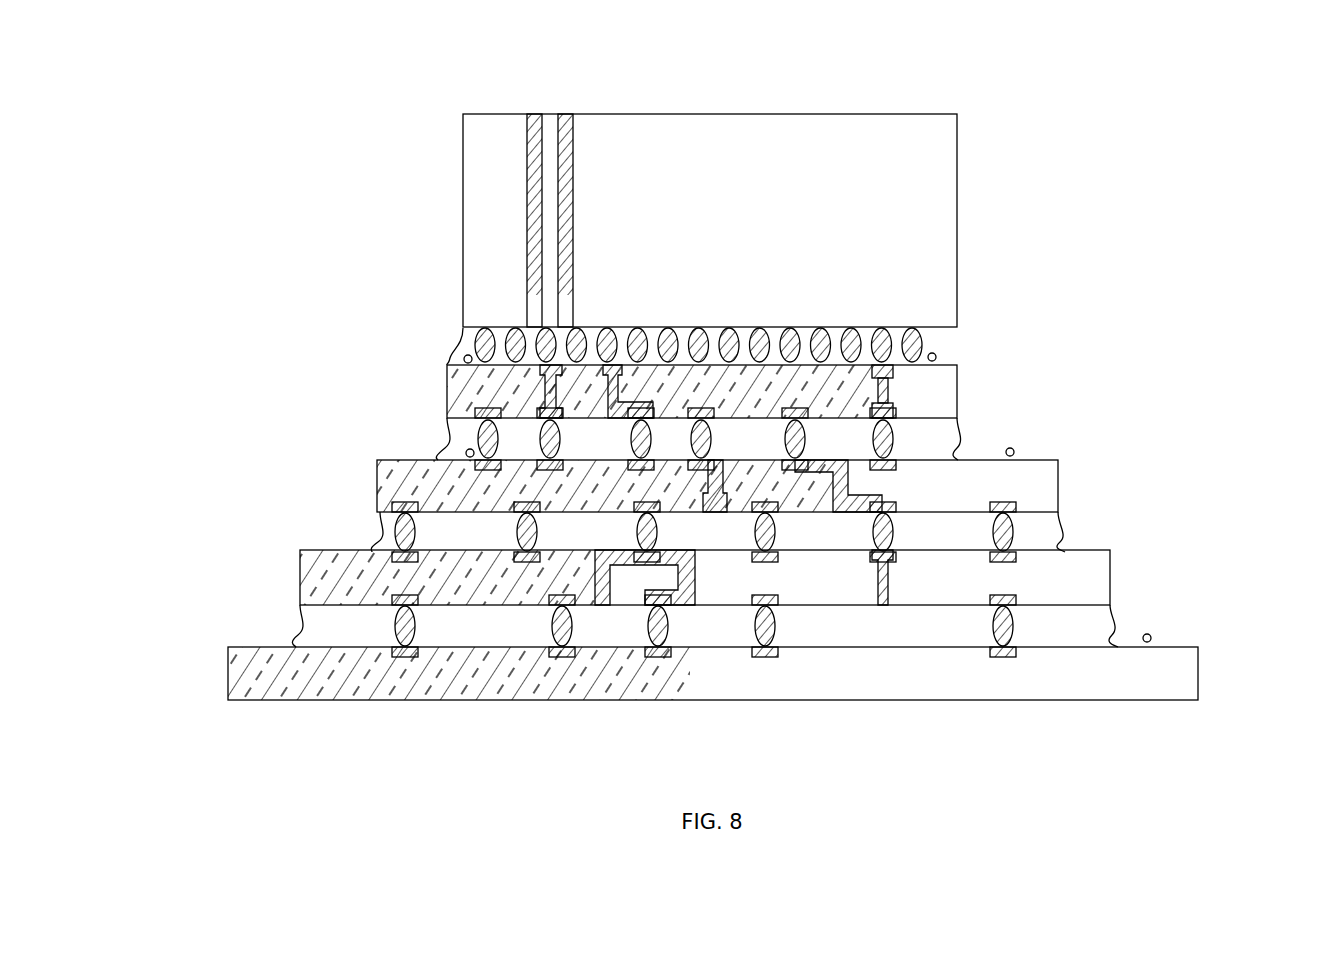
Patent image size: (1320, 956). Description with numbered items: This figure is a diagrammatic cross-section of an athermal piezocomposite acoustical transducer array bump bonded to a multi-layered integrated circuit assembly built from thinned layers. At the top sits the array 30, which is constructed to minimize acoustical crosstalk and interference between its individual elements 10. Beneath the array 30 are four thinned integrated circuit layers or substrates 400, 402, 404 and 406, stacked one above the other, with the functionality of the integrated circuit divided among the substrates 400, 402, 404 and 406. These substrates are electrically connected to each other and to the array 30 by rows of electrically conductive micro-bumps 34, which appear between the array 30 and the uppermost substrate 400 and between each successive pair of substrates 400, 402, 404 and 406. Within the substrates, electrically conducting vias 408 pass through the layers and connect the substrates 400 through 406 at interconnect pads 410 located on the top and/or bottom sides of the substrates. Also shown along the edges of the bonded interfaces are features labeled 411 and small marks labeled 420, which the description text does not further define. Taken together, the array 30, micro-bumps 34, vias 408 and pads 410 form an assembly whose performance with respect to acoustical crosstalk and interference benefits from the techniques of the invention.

The element 10 is at (527, 137).
The array 30 is at (463, 163).
The electrically conductive micro-bump 34 is at (465, 330).
The thinned integrated circuit layer or substrate 400 is at (447, 378).
The thinned integrated circuit layer or substrate 402 is at (377, 480).
The thinned integrated circuit layer or substrate 404 is at (300, 567).
The thinned integrated circuit layer or substrate 406 is at (228, 680).
The electrically conducting via 408 is at (895, 396).
The interconnect pad 410 is at (957, 380).
The underfill fillet 411 is at (1065, 525).
The alignment mark 420 is at (463, 352).